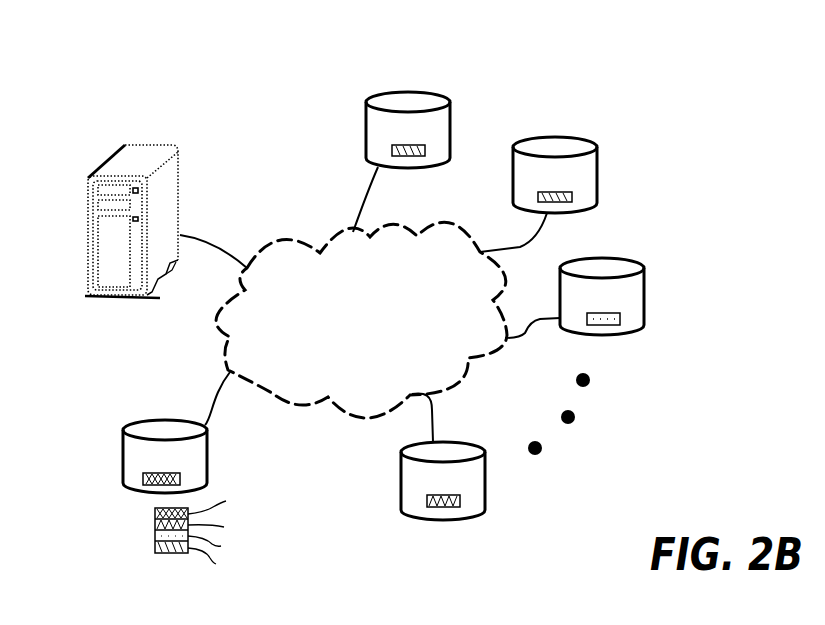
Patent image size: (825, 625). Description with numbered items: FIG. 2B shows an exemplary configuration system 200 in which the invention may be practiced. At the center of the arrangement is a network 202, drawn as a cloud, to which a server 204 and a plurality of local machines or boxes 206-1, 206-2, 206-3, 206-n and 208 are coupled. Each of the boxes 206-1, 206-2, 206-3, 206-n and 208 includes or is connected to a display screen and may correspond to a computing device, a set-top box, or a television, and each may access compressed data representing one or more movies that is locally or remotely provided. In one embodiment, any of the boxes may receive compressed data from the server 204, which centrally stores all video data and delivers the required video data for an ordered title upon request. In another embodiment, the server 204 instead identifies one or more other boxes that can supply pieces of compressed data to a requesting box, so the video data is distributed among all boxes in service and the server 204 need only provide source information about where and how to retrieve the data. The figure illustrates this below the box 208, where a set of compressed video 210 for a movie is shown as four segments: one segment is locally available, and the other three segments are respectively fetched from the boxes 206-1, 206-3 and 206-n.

The distributed storage environment 200 is at (439, 303).
The network 202 is at (361, 320).
The server 204 is at (166, 207).
The box 206-1 is at (401, 162).
The box 206-2 is at (538, 194).
The box 206-3 is at (574, 298).
The box 206-n is at (443, 456).
The box 208 is at (176, 432).
The set of compressed video 210 is at (152, 508).